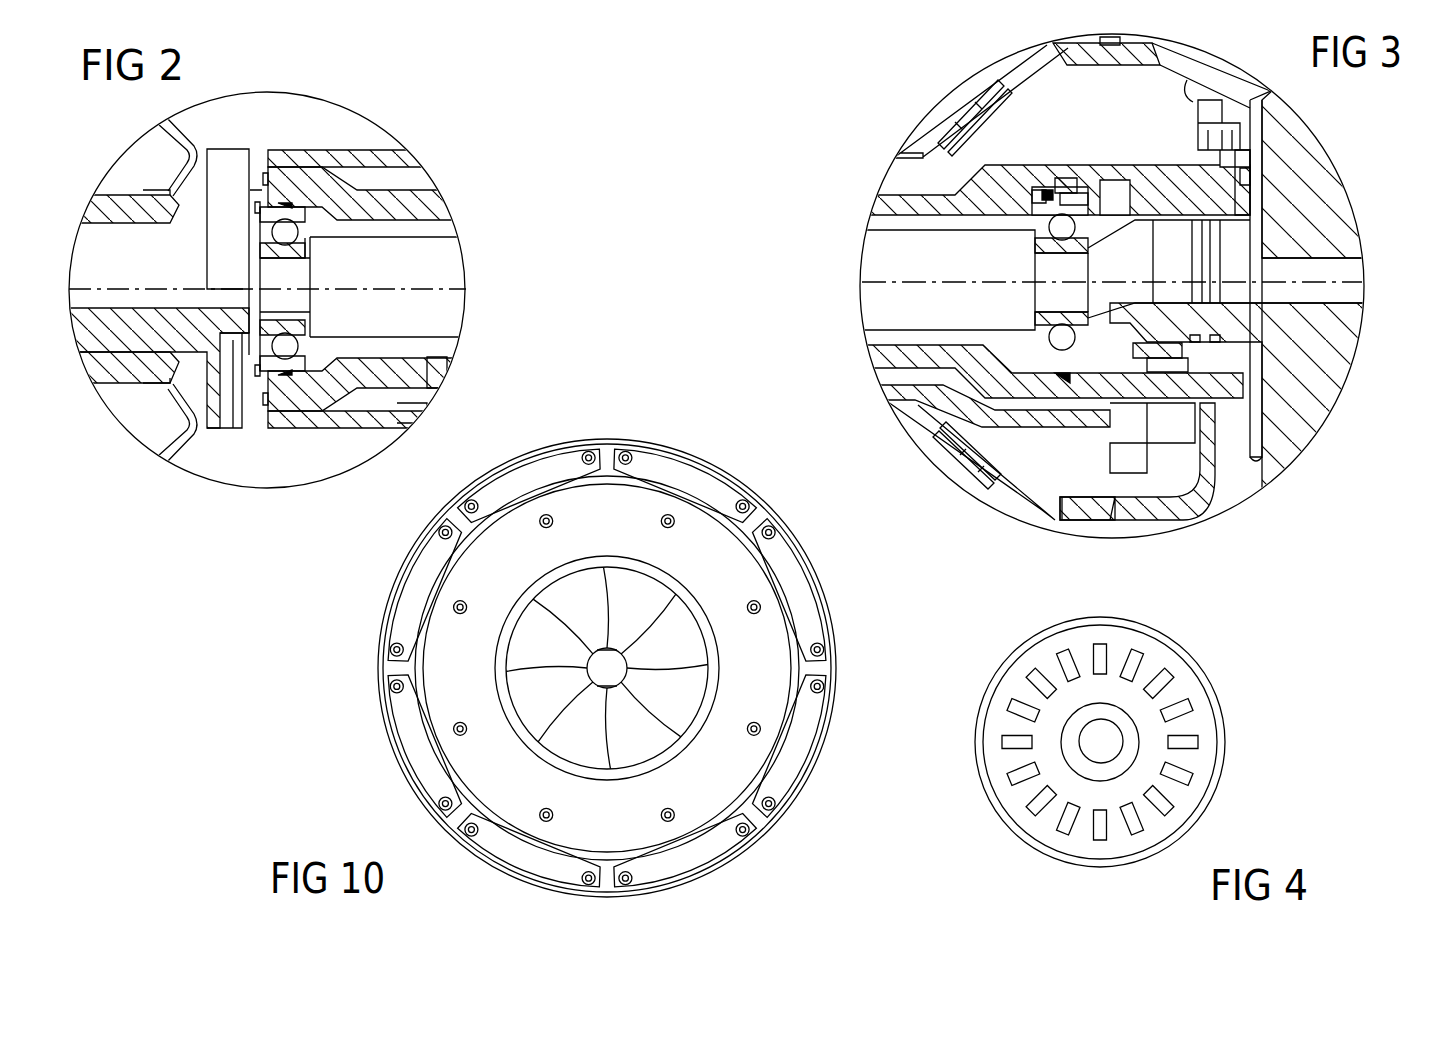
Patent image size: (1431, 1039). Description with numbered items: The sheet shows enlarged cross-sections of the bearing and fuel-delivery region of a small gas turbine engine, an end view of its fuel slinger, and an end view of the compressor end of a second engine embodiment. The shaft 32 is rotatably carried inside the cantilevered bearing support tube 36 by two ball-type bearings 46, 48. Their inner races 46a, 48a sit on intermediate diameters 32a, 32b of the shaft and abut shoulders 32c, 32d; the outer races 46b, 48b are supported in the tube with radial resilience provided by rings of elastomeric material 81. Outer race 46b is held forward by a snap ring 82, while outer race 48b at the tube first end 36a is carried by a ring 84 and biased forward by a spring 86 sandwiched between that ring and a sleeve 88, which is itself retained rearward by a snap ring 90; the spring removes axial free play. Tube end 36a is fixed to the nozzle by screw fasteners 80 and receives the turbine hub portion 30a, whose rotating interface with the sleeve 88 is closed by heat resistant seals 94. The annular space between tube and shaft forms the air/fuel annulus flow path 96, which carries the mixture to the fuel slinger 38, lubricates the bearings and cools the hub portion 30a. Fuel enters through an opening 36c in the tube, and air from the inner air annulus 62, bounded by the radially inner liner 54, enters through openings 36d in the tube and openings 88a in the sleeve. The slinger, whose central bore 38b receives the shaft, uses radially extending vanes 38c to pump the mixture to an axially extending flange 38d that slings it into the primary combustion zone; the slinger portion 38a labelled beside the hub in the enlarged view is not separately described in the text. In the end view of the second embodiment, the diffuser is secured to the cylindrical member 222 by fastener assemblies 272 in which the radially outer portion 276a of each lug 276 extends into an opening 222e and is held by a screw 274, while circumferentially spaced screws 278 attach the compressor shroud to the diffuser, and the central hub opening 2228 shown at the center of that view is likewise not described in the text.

In FIG. 3, the hub portion 30a is at (1243, 245).
In FIG. 2, the shaft 32 is at (465, 270).
In FIG. 2, the intermediate diameter 32a is at (298, 298).
In FIG. 3, the intermediate diameter 32b is at (1048, 303).
In FIG. 2, the shoulder 32c is at (300, 311).
In FIG. 3, the shoulder 32d is at (1042, 272).
In FIG. 2, the bearing support tube 36 is at (418, 188).
In FIG. 3, the bearing support tube 36 is at (895, 196).
In FIG. 3, the first end 36a is at (1198, 100).
In FIG. 3, the opening 36c is at (1150, 410).
In FIG. 3, the openings 36d is at (1153, 190).
In FIG. 2, the fuel slinger 38 is at (238, 134).
In FIG. 4, the fuel slinger 38 is at (1228, 706).
In FIG. 2, the flex plate hub 38a is at (85, 242).
In FIG. 4, the central bore 38b is at (1083, 730).
In FIG. 2, the vanes 38c is at (257, 430).
In FIG. 4, the vanes 38c is at (1173, 677).
In FIG. 2, the flange 38d is at (256, 445).
In FIG. 4, the flange 38d is at (1012, 829).
In FIG. 2, the bearing 46 is at (305, 196).
In FIG. 2, the inner race 46a is at (312, 244).
In FIG. 2, the outer race 46b is at (258, 222).
In FIG. 3, the bearing 48 is at (1036, 172).
In FIG. 3, the inner race 48a is at (1035, 245).
In FIG. 3, the outer race 48b is at (1032, 208).
In FIG. 3, the radially inner liner 54 is at (916, 423).
In FIG. 2, the inner air annulus 62 is at (405, 160).
In FIG. 3, the inner air annulus 62 is at (1045, 75).
In FIG. 3, the screw fasteners 80 is at (1245, 130).
In FIG. 2, the rings of elastomeric material 81 is at (283, 374).
In FIG. 3, the rings of elastomeric material 81 is at (1061, 382).
In FIG. 2, the snap ring 82 is at (255, 356).
In FIG. 3, the ring 84 is at (1073, 188).
In FIG. 3, the spring 86 is at (1121, 175).
In FIG. 3, the sleeve 88 is at (1218, 212).
In FIG. 3, the openings 88a is at (1163, 365).
In FIG. 3, the snap ring 90 is at (1240, 200).
In FIG. 3, the heat resistant seals 94 is at (1218, 270).
In FIG. 2, the air/fuel annulus flow path 96 is at (440, 346).
In FIG. 10, the cylindrical member 222 is at (384, 705).
In FIG. 10, the openings 222e is at (583, 440).
In FIG. 10, the fastener assemblies 272 is at (368, 659).
In FIG. 10, the screws 274 is at (737, 492).
In FIG. 10, the lugs 276 is at (426, 590).
In FIG. 10, the radially outer portion 276a is at (463, 512).
In FIG. 10, the screws 278 is at (455, 600).
In FIG. 10, the hub opening 2228 is at (675, 590).